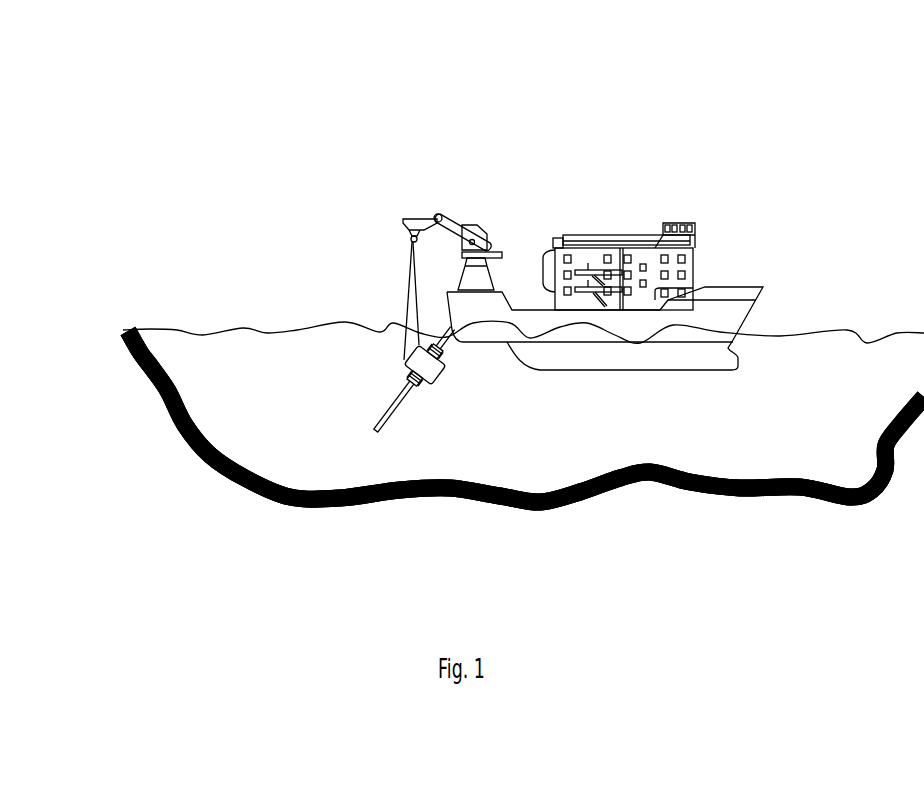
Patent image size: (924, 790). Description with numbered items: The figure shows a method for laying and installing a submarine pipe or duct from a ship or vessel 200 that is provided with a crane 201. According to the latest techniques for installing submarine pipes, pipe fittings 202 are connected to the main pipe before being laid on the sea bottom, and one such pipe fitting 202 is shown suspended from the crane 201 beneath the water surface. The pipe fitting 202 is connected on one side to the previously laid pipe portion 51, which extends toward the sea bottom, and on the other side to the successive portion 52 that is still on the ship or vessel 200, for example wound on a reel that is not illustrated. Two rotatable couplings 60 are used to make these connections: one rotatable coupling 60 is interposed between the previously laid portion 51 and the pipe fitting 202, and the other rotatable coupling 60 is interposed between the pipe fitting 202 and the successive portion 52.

The ship or vessel 200 is at (725, 205).
The crane 201 is at (455, 188).
The pipe fitting 202 is at (493, 439).
The rotatable coupling 60 is at (452, 366).
The successive portion 52 is at (442, 342).
The previously laid pipe portion 51 is at (397, 402).